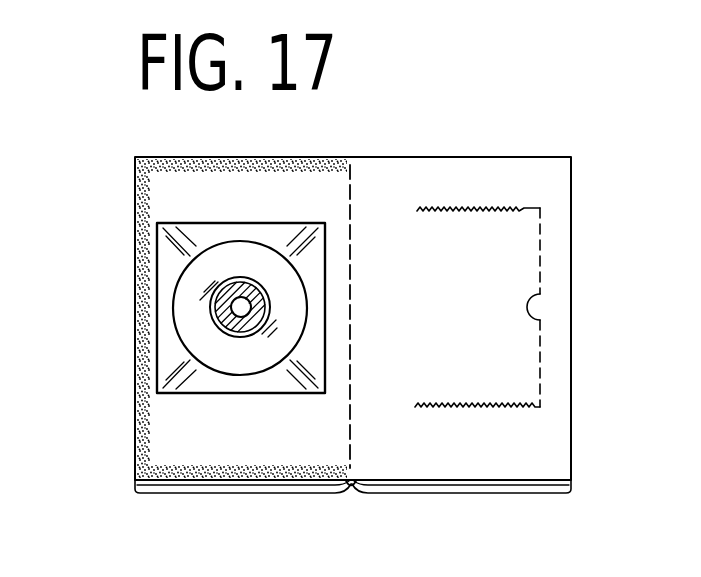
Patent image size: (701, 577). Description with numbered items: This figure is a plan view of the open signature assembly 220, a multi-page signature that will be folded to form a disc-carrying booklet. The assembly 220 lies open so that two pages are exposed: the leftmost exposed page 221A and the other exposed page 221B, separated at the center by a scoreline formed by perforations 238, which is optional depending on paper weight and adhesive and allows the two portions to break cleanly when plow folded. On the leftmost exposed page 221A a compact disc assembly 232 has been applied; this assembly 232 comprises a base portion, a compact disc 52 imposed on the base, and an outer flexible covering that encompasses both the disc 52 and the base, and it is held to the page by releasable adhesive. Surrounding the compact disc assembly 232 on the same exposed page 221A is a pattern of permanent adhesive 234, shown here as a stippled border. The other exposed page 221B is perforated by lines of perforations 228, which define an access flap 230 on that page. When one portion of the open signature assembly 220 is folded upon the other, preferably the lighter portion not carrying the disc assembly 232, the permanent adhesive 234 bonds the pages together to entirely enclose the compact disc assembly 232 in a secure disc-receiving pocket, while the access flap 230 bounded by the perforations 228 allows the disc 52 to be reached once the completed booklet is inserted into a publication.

The open signature assembly 220 is at (103, 339).
The leftmost exposed page 221A is at (275, 443).
The other exposed page 221B is at (497, 453).
The permanent adhesive 234 is at (145, 400).
The center scoreline perforations 238 is at (351, 484).
The compact disc assembly 232 is at (268, 250).
The compact disc 52 is at (228, 250).
The lines of perforations 228 is at (540, 238).
The access flap 230 is at (519, 277).